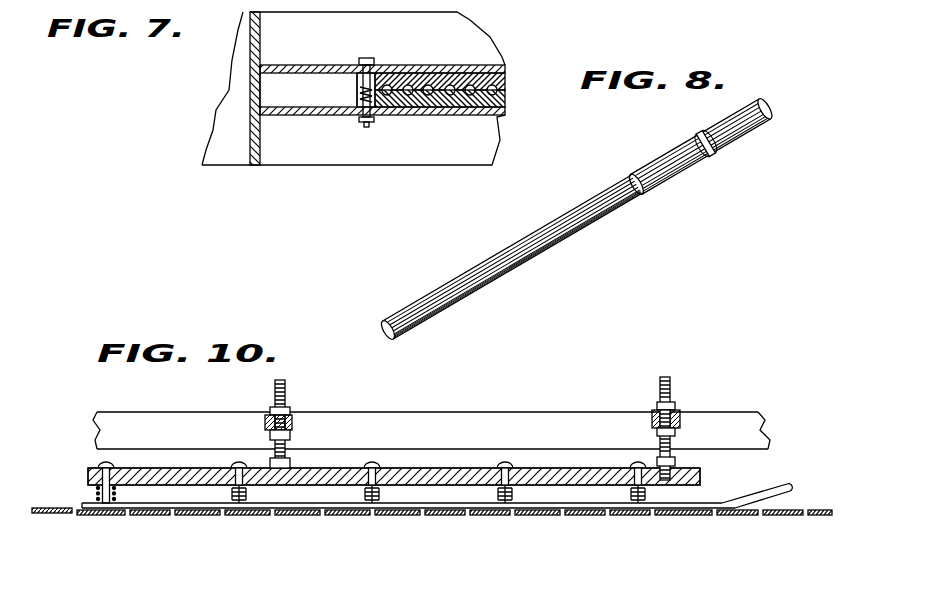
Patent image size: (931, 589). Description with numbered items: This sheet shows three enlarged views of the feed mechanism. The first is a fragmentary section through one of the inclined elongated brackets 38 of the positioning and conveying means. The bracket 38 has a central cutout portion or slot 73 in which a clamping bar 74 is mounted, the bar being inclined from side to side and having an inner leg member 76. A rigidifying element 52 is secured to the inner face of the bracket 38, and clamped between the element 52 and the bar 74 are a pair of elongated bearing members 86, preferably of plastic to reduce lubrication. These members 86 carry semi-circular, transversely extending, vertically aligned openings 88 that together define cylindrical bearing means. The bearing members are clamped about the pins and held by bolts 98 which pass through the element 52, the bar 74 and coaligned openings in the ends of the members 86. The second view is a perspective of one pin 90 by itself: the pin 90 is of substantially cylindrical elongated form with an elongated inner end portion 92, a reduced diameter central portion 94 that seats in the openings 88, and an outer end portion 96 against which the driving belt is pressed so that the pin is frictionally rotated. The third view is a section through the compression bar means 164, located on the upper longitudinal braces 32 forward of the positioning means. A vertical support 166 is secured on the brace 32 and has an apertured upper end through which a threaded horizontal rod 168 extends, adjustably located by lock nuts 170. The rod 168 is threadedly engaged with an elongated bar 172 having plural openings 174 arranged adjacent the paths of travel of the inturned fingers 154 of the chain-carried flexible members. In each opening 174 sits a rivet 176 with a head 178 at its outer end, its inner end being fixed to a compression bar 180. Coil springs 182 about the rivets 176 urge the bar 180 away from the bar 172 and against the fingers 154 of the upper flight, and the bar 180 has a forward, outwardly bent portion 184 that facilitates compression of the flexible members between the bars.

In FIG. 7, the elongated bracket 38 is at (460, 35).
In FIG. 7, the rigidifying element 52 is at (328, 65).
In FIG. 7, the bolt 98 is at (372, 62).
In FIG. 7, the reduced diameter central portion 94 is at (505, 83).
In FIG. 8, the reduced diameter central portion 94 is at (682, 163).
In FIG. 7, the bearing member 86 is at (505, 100).
In FIG. 7, the central cutout portion 73 is at (280, 92).
In FIG. 7, the clamping bar 74 is at (320, 115).
In FIG. 7, the opening 88 is at (395, 115).
In FIG. 7, the inner leg member 76 is at (447, 147).
In FIG. 8, the outer end portion 96 is at (755, 132).
In FIG. 8, the pin 90 is at (566, 251).
In FIG. 8, the inner end portion 92 is at (477, 283).
In FIG. 10, the upper longitudinal brace 32 is at (555, 438).
In FIG. 10, the compression bar means 164 is at (430, 466).
In FIG. 10, the vertical support 166 is at (680, 422).
In FIG. 10, the threaded horizontal rod 168 is at (287, 390).
In FIG. 10, the lock nut 170 is at (292, 432).
In FIG. 10, the elongated bar 172 is at (450, 477).
In FIG. 10, the opening 174 is at (108, 478).
In FIG. 10, the rivet 176 is at (247, 478).
In FIG. 10, the head 178 is at (245, 470).
In FIG. 10, the compression bar 180 is at (337, 507).
In FIG. 10, the coil spring 182 is at (117, 492).
In FIG. 10, the outwardly bent portion 184 is at (763, 490).
In FIG. 10, the inturned finger 154 is at (510, 513).